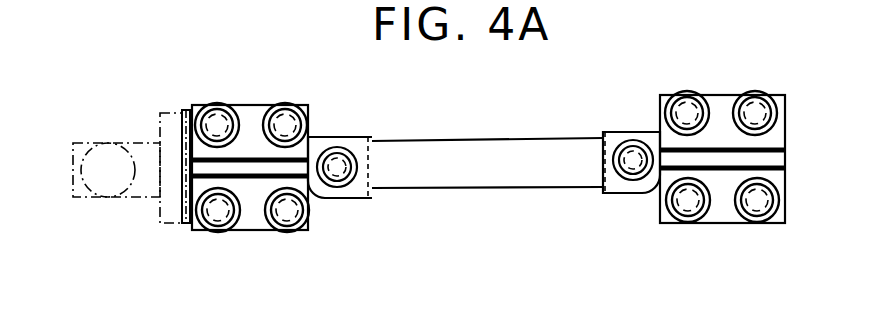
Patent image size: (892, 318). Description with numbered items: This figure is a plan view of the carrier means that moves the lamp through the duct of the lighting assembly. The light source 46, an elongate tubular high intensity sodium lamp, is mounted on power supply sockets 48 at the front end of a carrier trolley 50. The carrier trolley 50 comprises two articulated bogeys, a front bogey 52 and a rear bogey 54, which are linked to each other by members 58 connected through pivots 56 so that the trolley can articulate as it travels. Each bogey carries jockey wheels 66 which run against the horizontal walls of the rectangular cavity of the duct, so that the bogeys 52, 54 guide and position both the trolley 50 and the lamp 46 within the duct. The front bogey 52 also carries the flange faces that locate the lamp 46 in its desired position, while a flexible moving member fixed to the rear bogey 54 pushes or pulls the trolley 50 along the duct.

The light source 46 is at (87, 187).
The power supply sockets 48 is at (145, 197).
The carrier trolley 50 is at (333, 213).
The front bogey 52 is at (257, 228).
The rear bogey 54 is at (725, 233).
The pivot 56 is at (338, 157).
The members 58 is at (478, 157).
The jockey wheels 66 is at (273, 103).